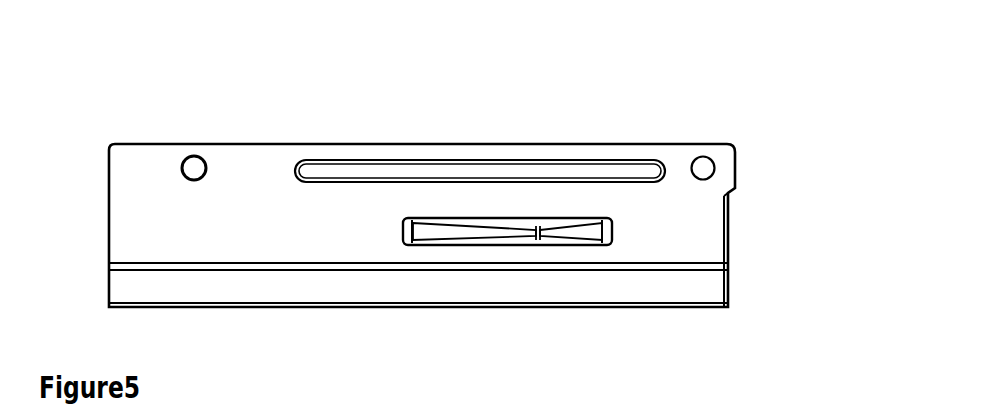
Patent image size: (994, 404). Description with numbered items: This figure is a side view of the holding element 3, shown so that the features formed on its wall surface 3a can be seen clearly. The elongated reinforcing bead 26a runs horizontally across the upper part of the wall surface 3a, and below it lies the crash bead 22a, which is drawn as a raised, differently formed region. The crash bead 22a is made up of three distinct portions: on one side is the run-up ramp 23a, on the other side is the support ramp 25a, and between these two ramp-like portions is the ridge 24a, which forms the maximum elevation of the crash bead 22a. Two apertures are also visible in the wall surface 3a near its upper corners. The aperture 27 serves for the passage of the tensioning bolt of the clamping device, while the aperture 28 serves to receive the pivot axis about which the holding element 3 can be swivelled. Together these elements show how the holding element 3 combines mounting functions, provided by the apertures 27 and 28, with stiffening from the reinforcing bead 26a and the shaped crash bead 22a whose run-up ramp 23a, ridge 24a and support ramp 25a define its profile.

The holding element 3 is at (377, 116).
The wall surface 3a is at (285, 228).
The crash bead 22a is at (502, 249).
The run-up ramp 23a is at (427, 233).
The ridge 24a is at (538, 233).
The support ramp 25a is at (583, 232).
The reinforcing bead 26a is at (468, 172).
The aperture 27 is at (196, 170).
The aperture 28 is at (704, 170).